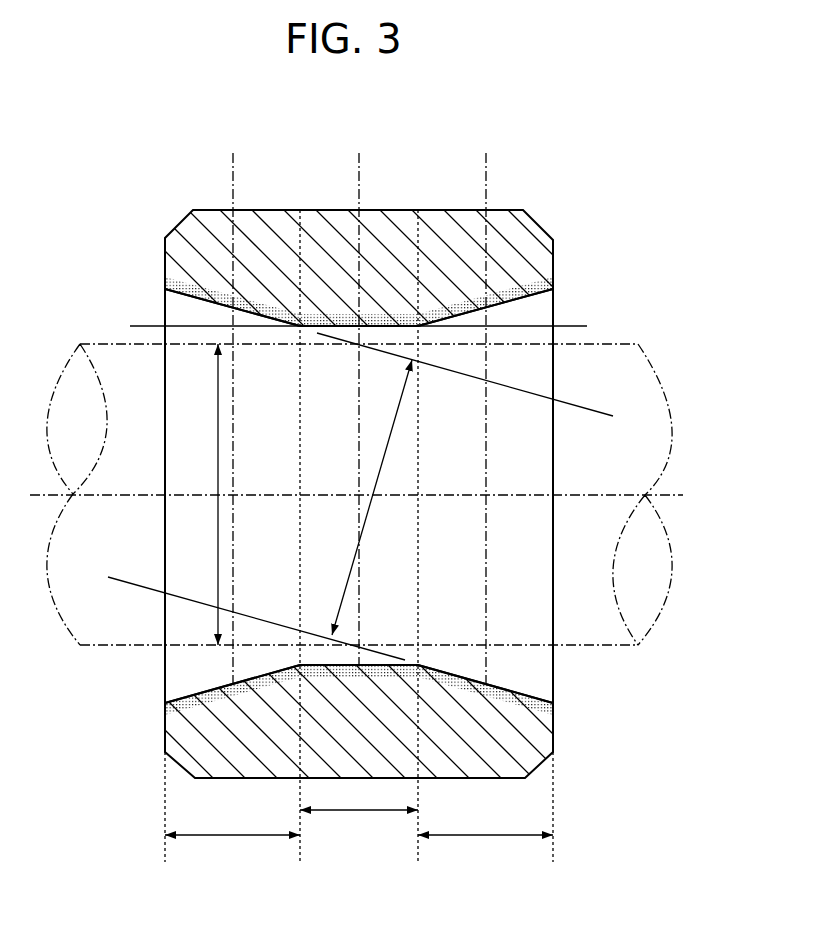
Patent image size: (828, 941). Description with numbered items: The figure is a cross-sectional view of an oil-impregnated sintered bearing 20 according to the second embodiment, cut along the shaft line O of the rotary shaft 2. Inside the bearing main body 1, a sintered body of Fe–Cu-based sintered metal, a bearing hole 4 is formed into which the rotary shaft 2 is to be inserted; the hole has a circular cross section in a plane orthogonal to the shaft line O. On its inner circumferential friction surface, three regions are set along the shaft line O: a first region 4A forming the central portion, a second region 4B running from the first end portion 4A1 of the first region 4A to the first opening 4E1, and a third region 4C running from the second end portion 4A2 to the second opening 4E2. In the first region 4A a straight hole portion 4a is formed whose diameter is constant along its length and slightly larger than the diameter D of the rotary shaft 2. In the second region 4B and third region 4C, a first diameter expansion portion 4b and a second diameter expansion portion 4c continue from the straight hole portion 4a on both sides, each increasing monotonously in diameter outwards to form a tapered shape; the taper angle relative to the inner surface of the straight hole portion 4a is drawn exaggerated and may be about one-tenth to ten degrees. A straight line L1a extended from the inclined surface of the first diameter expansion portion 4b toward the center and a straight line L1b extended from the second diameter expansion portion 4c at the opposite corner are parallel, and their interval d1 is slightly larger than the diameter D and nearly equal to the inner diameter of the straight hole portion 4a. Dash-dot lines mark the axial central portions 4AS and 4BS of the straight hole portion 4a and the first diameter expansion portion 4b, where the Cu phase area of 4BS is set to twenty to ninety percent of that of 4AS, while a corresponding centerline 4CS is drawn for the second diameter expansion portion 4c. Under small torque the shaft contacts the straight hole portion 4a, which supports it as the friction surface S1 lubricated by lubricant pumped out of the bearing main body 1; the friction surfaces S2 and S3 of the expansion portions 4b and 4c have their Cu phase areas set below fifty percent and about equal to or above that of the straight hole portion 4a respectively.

The oil-impregnated sintered bearing 20 is at (620, 201).
The bearing main body 1 is at (542, 230).
The rotary shaft 2 is at (626, 344).
The bearing hole 4 is at (498, 528).
The straight hole portion 4a is at (343, 328).
The first diameter expansion portion 4b is at (520, 301).
The second diameter expansion portion 4c is at (195, 297).
The center line of left tapered portion 4CS is at (232, 402).
The central portion of the straight hole portion friction surface 4AS is at (359, 393).
The central portion of the first diameter expansion portion friction surface 4BS is at (486, 402).
The first region 4A is at (359, 826).
The second region 4B is at (485, 851).
The third region 4C is at (232, 851).
The first end portion 4A1 is at (418, 552).
The second end portion 4A2 is at (300, 552).
The first opening 4E1 is at (553, 823).
The second opening 4E2 is at (165, 823).
The friction surface S1 is at (372, 666).
The friction surface of the first diameter expansion portion S2 is at (469, 312).
The friction surface of the second diameter expansion portion S3 is at (247, 308).
The diameter of the rotary shaft D is at (205, 494).
The interval d1 is at (372, 497).
The straight line L1a is at (592, 408).
The straight line L1b is at (127, 578).
The shaft line O is at (369, 496).